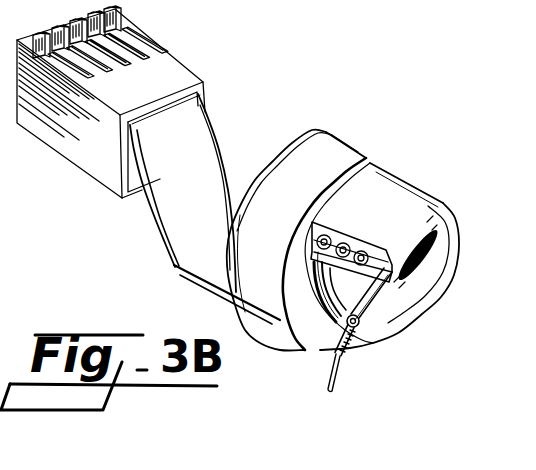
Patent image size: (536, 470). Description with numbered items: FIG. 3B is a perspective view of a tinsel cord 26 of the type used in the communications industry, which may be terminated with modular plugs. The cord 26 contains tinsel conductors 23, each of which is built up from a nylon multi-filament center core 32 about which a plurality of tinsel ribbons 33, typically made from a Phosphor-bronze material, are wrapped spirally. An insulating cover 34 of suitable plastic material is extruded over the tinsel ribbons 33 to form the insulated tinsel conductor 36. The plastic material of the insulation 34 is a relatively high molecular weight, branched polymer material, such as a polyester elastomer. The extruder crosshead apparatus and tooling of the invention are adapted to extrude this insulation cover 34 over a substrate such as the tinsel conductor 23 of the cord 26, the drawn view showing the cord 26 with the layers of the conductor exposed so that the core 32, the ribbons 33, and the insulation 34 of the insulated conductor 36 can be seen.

The cord 26 is at (283, 84).
The insulated tinsel conductor 36 is at (368, 313).
The tinsel conductor 23 is at (360, 350).
The tinsel ribbon 33 is at (342, 351).
The nylon multi-filament center core 32 is at (327, 380).
The insulating cover 34 is at (331, 323).